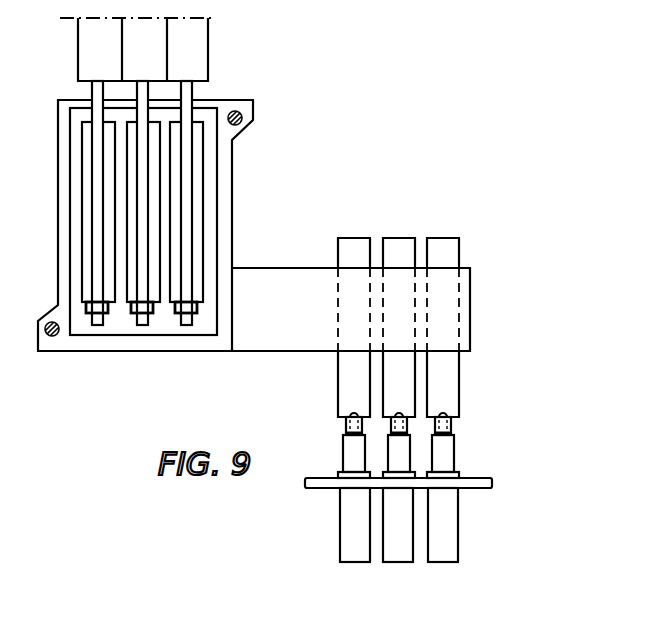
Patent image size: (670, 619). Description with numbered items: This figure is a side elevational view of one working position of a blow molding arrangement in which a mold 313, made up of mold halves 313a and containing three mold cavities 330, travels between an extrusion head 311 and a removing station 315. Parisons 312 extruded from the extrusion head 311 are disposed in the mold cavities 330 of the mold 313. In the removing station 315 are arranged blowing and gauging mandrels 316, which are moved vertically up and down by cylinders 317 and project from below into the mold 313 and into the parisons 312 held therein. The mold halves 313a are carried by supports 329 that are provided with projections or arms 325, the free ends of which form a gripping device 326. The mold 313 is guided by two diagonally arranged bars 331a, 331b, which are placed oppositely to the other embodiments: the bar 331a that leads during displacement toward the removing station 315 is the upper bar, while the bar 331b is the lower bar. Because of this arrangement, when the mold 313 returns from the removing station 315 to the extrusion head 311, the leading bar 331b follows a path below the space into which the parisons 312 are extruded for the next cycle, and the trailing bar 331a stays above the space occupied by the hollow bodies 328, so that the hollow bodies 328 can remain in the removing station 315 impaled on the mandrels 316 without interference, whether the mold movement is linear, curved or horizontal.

The extrusion head 311 is at (90, 51).
The parisons 312 is at (97, 324).
The mold 313 is at (218, 197).
The mold halves 313a is at (210, 243).
The removing station 315 is at (532, 498).
The blowing and gauging mandrels 316 is at (445, 457).
The cylinders 317 is at (452, 532).
The projections or arms 325 is at (289, 342).
The gripping device 326 is at (470, 314).
The hollow bodies 328 is at (459, 245).
The supports 329 is at (60, 313).
The mold cavities 330 is at (126, 306).
The upper bar 331a is at (253, 121).
The lower bar 331b is at (52, 337).